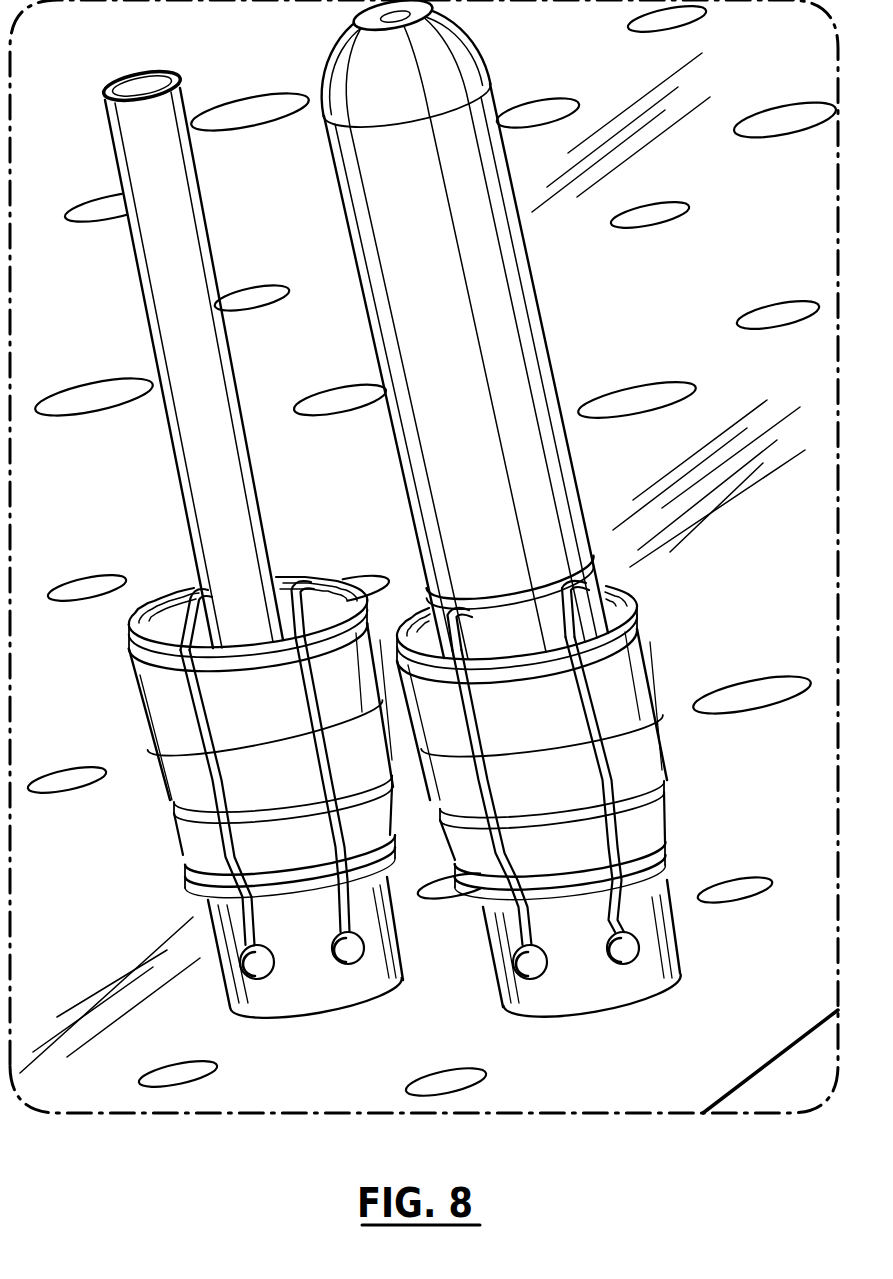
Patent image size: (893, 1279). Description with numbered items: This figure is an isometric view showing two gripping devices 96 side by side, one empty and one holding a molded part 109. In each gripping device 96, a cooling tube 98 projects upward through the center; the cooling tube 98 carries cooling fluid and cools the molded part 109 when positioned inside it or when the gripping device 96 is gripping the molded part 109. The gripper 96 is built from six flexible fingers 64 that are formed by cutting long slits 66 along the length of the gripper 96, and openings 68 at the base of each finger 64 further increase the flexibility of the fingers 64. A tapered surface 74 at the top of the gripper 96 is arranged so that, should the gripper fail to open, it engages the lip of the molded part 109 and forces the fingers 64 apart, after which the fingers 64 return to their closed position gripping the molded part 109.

The flexible fingers 64 is at (230, 717).
The slits 66 is at (483, 755).
The openings 68 is at (545, 975).
The tapered surface 74 is at (325, 594).
The gripping device 96 is at (422, 784).
The cooling tube 98 is at (180, 253).
The molded part 109 is at (505, 351).